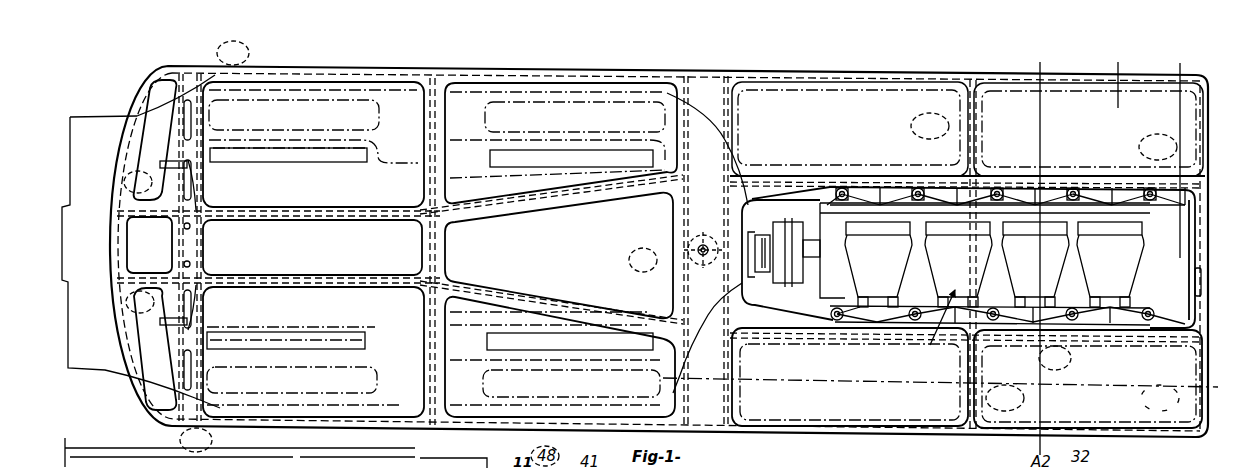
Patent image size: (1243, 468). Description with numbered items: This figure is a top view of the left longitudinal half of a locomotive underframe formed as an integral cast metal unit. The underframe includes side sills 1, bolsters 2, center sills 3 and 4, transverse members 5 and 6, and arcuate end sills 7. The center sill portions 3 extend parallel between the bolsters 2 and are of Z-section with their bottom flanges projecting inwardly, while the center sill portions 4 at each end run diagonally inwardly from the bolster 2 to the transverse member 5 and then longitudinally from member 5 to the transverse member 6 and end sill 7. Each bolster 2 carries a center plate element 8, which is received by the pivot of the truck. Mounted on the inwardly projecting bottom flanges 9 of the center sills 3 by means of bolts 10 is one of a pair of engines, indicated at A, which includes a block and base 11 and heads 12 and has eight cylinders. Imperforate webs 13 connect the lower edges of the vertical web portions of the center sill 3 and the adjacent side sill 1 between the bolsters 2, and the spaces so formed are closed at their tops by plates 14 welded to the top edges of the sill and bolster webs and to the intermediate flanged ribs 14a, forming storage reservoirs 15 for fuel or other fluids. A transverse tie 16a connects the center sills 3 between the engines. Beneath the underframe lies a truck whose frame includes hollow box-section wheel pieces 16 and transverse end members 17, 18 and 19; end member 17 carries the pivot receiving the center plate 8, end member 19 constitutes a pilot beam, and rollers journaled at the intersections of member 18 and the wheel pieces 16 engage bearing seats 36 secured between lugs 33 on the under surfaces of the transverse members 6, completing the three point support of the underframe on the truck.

The side sill 1 is at (858, 74).
The bolster 2 is at (668, 288).
The center sill 3 is at (1094, 180).
The center sill 4 is at (503, 218).
The transverse member 5 is at (422, 170).
The transverse member 6 is at (197, 321).
The arcuate end sill 7 is at (115, 318).
The center plate element 8 is at (685, 258).
The bottom flange 9 is at (797, 192).
The bolt 10 is at (913, 188).
The block and base 11 is at (985, 250).
The head 12 is at (1040, 62).
The imperforate web 13 is at (1118, 62).
The plate 14 is at (908, 94).
The flanged rib 14a is at (966, 116).
The storage reservoir 15 is at (1180, 63).
The wheel piece 16 is at (464, 128).
The transverse tie 16a is at (1197, 282).
The transverse end member 17 is at (720, 132).
The transverse member 18 is at (203, 388).
The transverse end member 19 is at (77, 363).
The lug 33 is at (186, 415).
The bearing seat 36 is at (170, 132).
The engine A is at (933, 328).